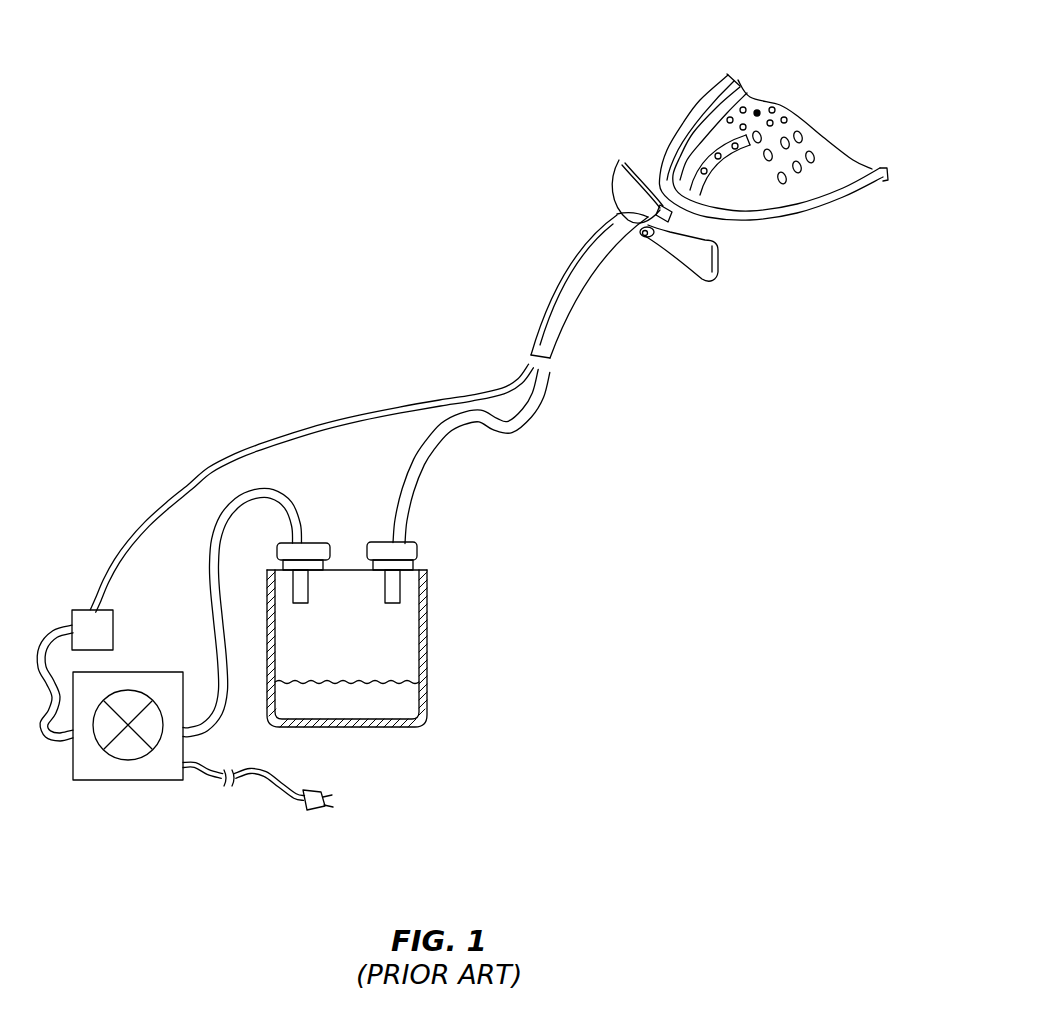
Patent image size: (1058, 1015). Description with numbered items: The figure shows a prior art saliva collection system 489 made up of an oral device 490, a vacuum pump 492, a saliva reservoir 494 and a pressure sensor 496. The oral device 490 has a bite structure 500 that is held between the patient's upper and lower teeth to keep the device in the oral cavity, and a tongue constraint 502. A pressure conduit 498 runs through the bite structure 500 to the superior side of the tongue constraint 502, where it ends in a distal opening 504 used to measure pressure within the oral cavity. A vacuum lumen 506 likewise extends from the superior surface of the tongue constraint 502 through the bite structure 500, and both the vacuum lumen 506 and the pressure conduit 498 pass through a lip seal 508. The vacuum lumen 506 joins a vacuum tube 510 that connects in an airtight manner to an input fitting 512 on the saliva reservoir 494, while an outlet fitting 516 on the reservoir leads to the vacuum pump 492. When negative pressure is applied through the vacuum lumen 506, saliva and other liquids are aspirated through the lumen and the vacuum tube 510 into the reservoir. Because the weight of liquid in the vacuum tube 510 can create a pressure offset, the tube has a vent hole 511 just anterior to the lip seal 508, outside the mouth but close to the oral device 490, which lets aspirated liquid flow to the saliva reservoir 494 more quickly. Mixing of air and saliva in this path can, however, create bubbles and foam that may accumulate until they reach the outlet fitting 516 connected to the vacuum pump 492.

The system 489 is at (345, 213).
The oral device 490 is at (702, 58).
The vacuum pump 492 is at (113, 780).
The saliva reservoir 494 is at (427, 700).
The pressure sensor 496 is at (74, 608).
The pressure conduit 498 is at (674, 184).
The bite structure 500 is at (785, 205).
The tongue constraint 502 is at (827, 177).
The distal opening 504 is at (697, 170).
The vacuum lumen 506 is at (715, 165).
The lip seal 508 is at (690, 258).
The vacuum tube 510 is at (565, 321).
The vent hole 511 is at (647, 240).
The input fitting 512 is at (417, 548).
The outlet fitting 516 is at (314, 543).